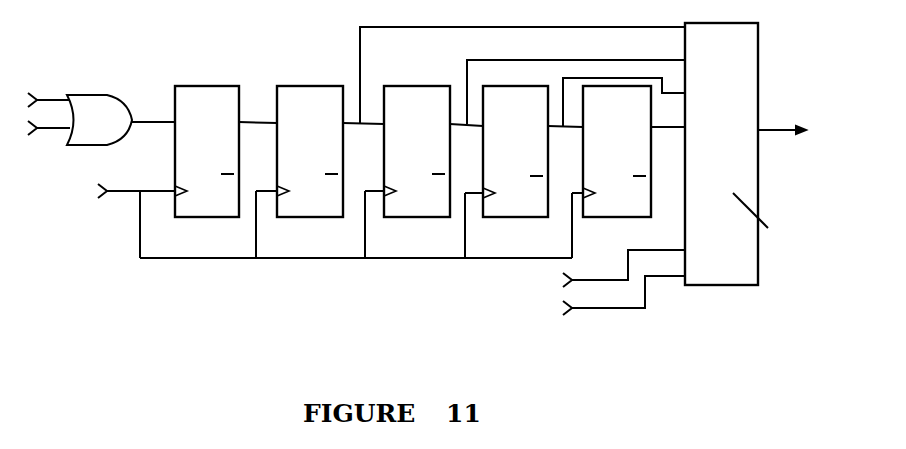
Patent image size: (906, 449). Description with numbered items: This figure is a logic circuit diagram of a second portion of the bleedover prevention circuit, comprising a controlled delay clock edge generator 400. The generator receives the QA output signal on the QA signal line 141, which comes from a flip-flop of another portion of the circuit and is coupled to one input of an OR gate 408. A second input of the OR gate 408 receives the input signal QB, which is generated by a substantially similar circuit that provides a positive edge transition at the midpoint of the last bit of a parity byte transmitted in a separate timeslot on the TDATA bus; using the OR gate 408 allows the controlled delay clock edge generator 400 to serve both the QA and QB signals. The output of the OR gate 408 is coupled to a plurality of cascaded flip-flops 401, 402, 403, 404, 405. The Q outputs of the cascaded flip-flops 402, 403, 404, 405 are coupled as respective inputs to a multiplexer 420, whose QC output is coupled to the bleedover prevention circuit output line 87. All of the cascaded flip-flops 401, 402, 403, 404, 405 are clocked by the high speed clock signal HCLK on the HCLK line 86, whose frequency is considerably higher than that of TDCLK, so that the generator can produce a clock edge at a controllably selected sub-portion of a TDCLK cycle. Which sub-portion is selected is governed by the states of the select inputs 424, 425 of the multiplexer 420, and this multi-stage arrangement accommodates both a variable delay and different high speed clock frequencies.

The QA signal line 141 is at (47, 106).
The OR gate 408 is at (118, 93).
The HCLK line 86 is at (123, 192).
The controlled delay clock edge generator 400 is at (318, 297).
The first cascaded flip-flop 401 is at (215, 82).
The second cascaded flip-flop 402 is at (300, 82).
The third cascaded flip-flop 403 is at (401, 85).
The fourth cascaded flip-flop 404 is at (506, 219).
The fifth cascaded flip-flop 405 is at (645, 152).
The multiplexer 420 is at (762, 85).
The bleedover prevention circuit output line 87 is at (783, 136).
The select input 425 is at (627, 252).
The select input 424 is at (612, 309).